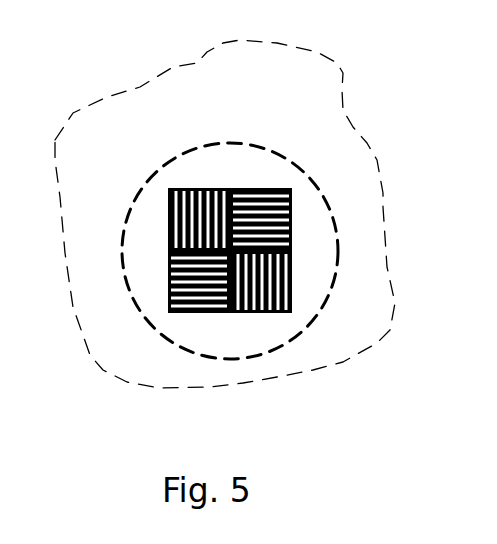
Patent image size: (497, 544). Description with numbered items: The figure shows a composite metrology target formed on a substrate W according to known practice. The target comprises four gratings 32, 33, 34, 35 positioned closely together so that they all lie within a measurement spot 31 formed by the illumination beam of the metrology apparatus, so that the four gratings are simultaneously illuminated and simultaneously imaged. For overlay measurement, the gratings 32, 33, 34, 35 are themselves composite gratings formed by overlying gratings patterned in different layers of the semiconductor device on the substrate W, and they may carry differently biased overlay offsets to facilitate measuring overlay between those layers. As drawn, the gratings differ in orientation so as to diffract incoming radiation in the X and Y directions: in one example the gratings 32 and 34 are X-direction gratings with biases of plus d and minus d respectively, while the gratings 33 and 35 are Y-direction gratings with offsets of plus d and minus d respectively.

The substrate W is at (150, 80).
The measurement spot 31 is at (165, 160).
The grating 32 is at (168, 232).
The grating 33 is at (168, 295).
The grating 34 is at (292, 297).
The grating 35 is at (292, 220).